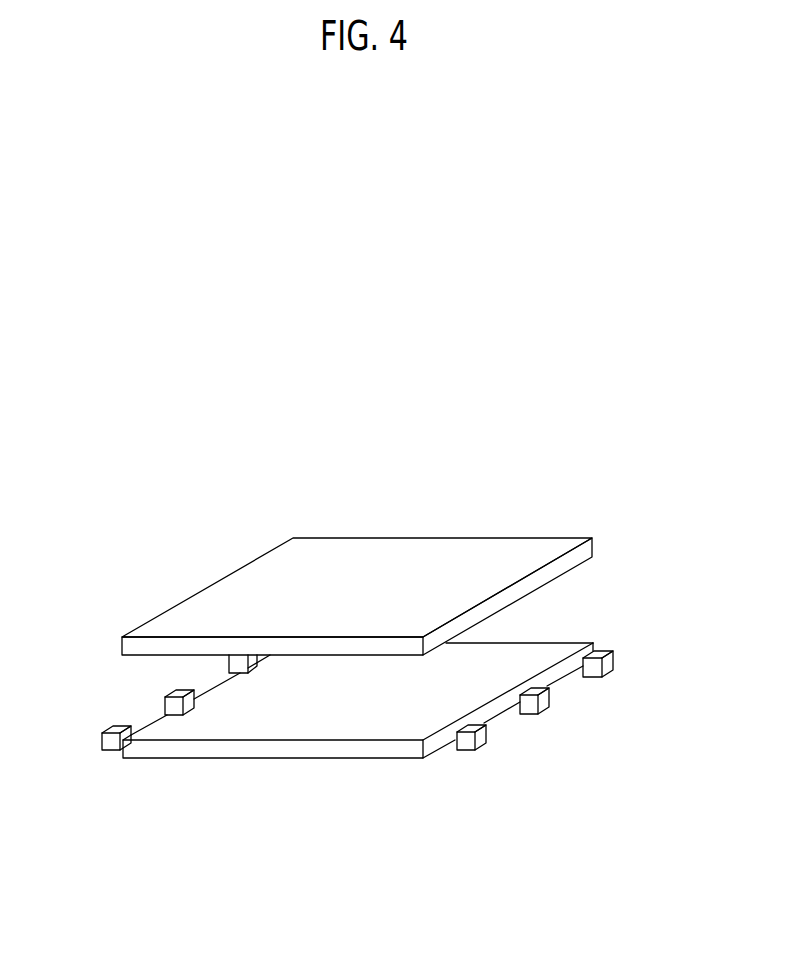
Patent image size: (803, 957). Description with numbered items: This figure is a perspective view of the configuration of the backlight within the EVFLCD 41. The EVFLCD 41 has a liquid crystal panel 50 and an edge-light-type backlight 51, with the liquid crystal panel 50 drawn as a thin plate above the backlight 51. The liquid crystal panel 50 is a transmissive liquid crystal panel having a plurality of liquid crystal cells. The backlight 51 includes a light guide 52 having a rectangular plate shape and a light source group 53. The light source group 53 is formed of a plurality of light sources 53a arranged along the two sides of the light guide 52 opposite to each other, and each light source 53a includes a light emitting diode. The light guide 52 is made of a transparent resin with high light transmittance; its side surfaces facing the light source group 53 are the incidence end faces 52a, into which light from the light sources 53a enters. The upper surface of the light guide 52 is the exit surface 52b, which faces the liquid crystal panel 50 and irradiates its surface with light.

The EVFLCD 41 is at (361, 632).
The liquid crystal panel 50 is at (378, 537).
The backlight 51 is at (361, 699).
The light guide 52 is at (358, 713).
The incidence end faces 52a is at (443, 743).
The exit surface 52b is at (512, 652).
The light source group 53 is at (361, 728).
The light sources 53a is at (351, 724).